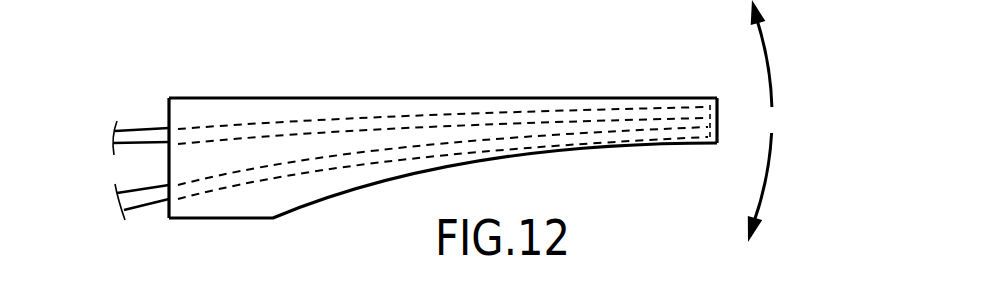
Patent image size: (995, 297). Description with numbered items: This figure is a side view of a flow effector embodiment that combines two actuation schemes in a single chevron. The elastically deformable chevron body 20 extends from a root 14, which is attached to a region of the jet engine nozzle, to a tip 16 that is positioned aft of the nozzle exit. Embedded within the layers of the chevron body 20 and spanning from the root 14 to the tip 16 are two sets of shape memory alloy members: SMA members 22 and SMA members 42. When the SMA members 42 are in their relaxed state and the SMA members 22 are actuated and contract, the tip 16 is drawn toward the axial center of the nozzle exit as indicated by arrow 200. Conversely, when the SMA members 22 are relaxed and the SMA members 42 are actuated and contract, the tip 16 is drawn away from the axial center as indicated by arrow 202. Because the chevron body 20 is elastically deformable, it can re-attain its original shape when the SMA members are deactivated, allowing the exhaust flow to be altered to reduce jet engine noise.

The root 14 is at (167, 160).
The tip 16 is at (717, 128).
The chevron body 20 is at (408, 98).
The shape memory alloy members 22 is at (157, 203).
The shape memory alloy members 42 is at (132, 130).
The arrow 200 is at (767, 185).
The arrow 202 is at (767, 50).